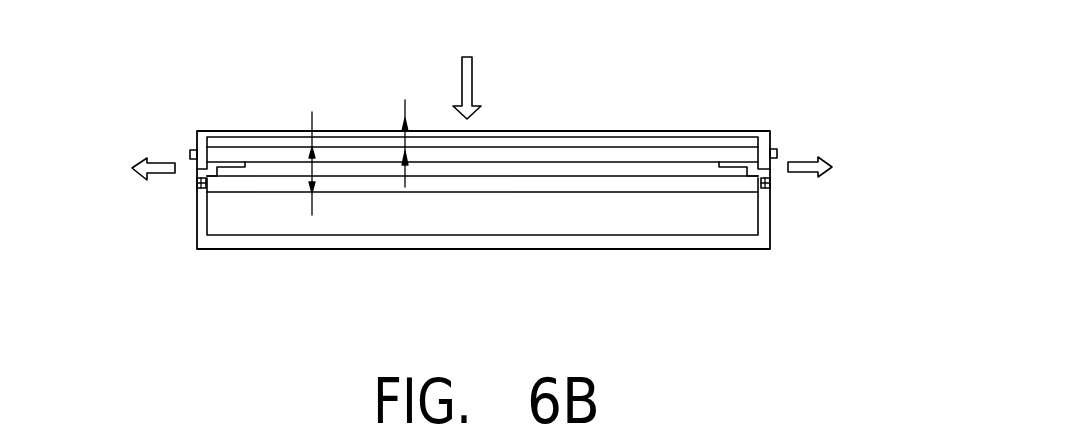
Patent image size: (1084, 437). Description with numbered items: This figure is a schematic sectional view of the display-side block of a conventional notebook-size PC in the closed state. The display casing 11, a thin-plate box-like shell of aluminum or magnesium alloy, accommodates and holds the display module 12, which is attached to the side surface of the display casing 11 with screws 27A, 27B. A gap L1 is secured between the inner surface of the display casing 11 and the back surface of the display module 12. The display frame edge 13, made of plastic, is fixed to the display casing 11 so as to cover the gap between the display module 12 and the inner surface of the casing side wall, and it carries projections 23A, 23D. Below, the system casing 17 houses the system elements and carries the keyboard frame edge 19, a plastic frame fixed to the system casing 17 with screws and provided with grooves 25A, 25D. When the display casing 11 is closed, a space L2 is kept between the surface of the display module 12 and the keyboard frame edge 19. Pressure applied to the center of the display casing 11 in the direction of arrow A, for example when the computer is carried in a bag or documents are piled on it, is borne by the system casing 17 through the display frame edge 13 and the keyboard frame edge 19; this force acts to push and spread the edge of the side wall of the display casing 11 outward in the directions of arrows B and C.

The display casing 11 is at (690, 131).
The display module 12 is at (556, 137).
The display frame edge 13 is at (230, 170).
The system casing 17 is at (658, 249).
The keyboard frame edge 19 is at (510, 192).
The projection 23A is at (131, 229).
The groove 25A is at (197, 183).
The projection 23D is at (850, 229).
The groove 25D is at (767, 184).
The screw 27A is at (190, 153).
The screw 27B is at (777, 152).
The arrow A is at (470, 63).
The arrow B is at (135, 161).
The arrow C is at (835, 160).
The gap L1 is at (400, 123).
The space L2 is at (303, 146).